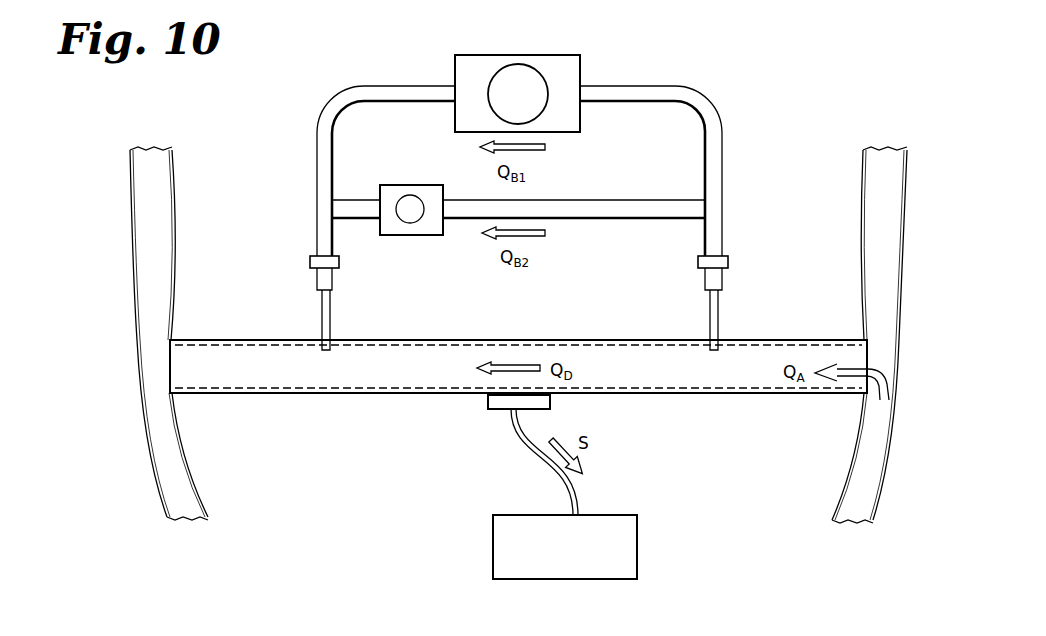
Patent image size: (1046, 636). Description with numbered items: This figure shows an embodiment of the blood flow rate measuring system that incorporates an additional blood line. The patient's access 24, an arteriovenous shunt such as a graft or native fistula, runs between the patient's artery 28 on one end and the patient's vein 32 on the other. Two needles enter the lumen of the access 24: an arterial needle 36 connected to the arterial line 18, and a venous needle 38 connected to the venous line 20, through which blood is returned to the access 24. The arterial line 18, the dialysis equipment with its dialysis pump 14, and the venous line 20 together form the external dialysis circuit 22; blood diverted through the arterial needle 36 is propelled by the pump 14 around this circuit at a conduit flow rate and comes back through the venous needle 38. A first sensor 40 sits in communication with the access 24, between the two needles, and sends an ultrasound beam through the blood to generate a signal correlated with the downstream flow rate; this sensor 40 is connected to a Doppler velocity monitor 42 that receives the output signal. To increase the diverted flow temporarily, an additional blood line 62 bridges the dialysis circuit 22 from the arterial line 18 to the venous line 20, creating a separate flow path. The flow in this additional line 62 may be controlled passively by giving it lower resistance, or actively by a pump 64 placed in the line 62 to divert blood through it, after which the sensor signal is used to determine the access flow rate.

The dialysis pump 14 is at (555, 55).
The arterial line 18 is at (712, 115).
The venous line 20 is at (340, 97).
The dialysis circuit 22 is at (727, 63).
The access 24 is at (338, 377).
The artery 28 is at (860, 192).
The vein 32 is at (137, 422).
The arterial needle 36 is at (710, 323).
The venous needle 38 is at (331, 323).
The first sensor 40 is at (478, 405).
The Doppler velocity monitor 42 is at (640, 553).
The additional blood line 62 is at (577, 218).
The pump 64 is at (395, 236).